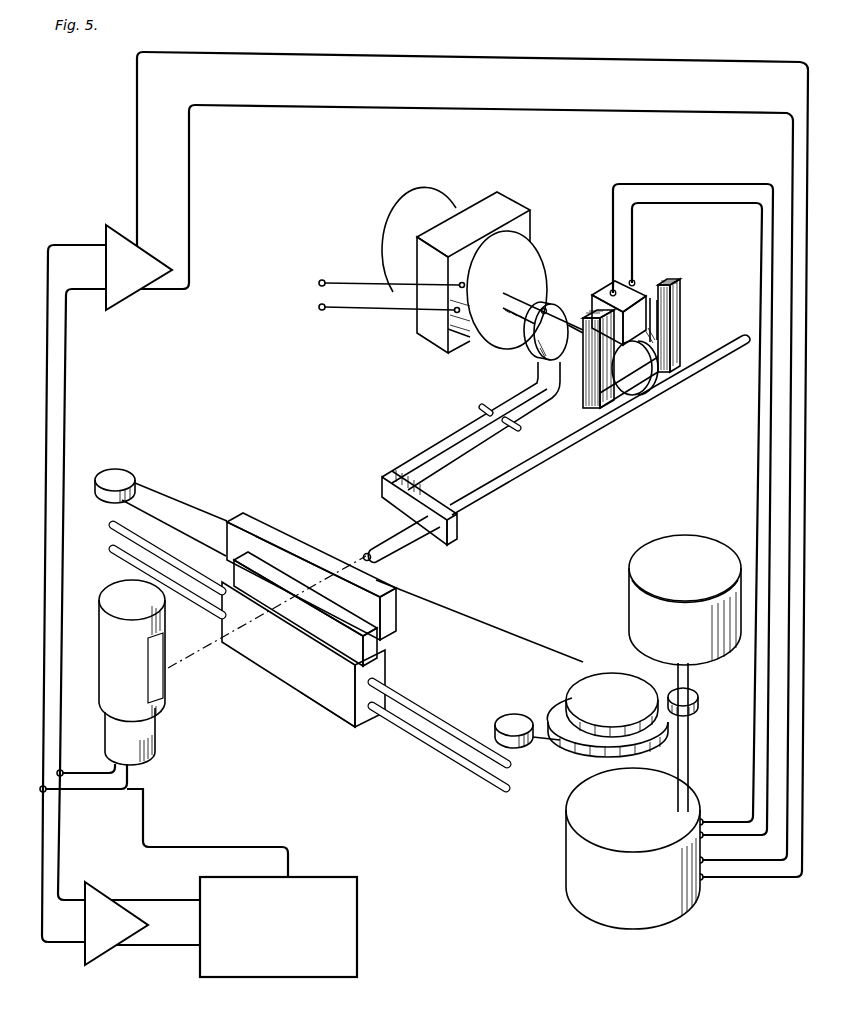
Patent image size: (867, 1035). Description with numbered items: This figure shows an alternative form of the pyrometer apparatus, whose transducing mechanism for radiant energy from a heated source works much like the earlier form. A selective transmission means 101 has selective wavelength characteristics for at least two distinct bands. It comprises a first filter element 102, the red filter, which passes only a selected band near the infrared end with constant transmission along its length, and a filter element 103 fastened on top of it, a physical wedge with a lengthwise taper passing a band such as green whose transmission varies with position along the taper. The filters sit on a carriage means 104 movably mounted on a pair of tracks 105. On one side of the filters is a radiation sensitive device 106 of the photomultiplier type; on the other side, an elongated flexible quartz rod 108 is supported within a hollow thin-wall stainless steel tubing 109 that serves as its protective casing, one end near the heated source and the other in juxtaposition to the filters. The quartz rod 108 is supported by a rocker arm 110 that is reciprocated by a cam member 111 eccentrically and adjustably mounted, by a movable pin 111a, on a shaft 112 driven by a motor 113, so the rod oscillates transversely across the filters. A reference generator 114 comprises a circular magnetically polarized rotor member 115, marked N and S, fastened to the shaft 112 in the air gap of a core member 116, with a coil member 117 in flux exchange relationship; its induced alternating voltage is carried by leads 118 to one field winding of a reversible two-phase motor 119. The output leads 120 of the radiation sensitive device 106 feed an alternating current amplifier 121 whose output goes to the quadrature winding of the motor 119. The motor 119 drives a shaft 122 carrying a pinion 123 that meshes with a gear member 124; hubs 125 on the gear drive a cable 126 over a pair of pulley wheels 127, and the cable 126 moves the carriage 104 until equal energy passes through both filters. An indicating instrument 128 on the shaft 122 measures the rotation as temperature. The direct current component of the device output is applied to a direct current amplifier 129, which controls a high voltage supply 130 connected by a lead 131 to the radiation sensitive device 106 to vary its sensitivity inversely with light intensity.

The selective transmission means 101 is at (283, 716).
The first filter element 102 is at (378, 642).
The filter element 103 is at (262, 530).
The carriage means 104 is at (343, 712).
The tracks 105 is at (473, 746).
The radiation sensitive device 106 is at (123, 590).
The flexible quartz rod 108 is at (373, 561).
The stainless steel tubing 109 is at (566, 442).
The rocker arm 110 is at (432, 448).
The cam member 111 is at (527, 350).
The movable pin 111a is at (548, 312).
The shaft 112 is at (523, 297).
The motor 113 is at (510, 210).
The reference generator 114 is at (712, 293).
The rotor member 115 is at (645, 362).
The core member 116 is at (670, 312).
The coil member 117 is at (638, 282).
The leads 118 is at (686, 204).
The two-phase motor 119 is at (639, 917).
The output leads 120 is at (91, 790).
The alternating current amplifier 121 is at (126, 296).
The shaft 122 is at (690, 758).
The pinion 123 is at (699, 701).
The gear member 124 is at (590, 758).
The hubs 125 is at (612, 705).
The cable 126 is at (525, 644).
The pulley wheels 127 is at (116, 471).
The indicating instrument 128 is at (680, 546).
The direct current amplifier 129 is at (92, 953).
The high voltage supply 130 is at (284, 978).
The lead 131 is at (249, 847).